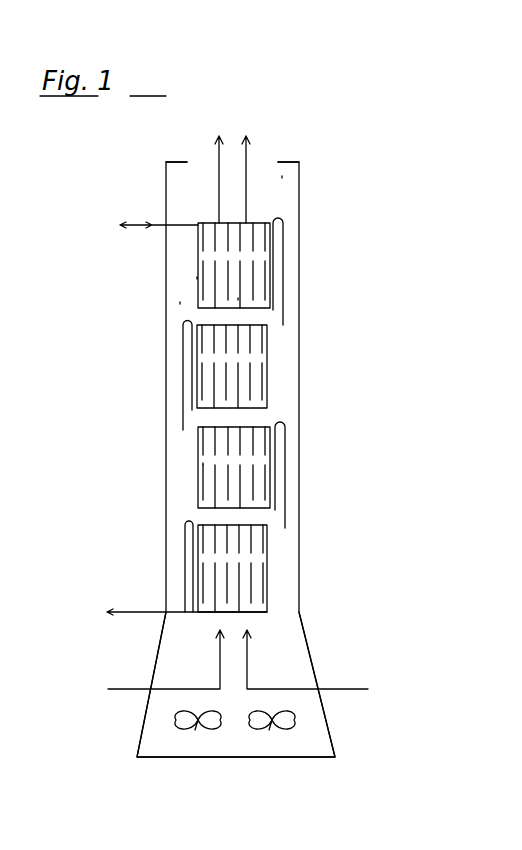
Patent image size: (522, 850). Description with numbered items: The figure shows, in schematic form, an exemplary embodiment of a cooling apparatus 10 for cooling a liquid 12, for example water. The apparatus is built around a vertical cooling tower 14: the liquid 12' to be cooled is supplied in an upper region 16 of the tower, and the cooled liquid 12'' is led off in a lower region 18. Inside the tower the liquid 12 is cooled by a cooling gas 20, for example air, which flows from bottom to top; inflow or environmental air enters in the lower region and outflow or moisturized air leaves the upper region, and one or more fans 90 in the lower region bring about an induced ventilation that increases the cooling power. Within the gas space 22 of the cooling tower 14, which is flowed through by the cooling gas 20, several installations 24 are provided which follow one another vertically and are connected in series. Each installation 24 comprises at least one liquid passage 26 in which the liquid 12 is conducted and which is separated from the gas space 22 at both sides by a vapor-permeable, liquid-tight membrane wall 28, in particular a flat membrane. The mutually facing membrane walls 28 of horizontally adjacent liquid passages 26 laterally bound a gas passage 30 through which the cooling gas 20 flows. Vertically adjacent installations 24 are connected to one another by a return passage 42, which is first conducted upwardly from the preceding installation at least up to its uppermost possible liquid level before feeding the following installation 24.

The cooling apparatus 10 is at (340, 64).
The liquid 12 is at (162, 417).
The liquid to be cooled 12' is at (149, 198).
The cooled liquid 12'' is at (183, 588).
The cooling tower 14 is at (310, 197).
The upper region 16 is at (282, 176).
The lower region 18 is at (175, 628).
The cooling gas 20 is at (215, 155).
The gas space 22 is at (180, 302).
The installation 24 is at (191, 283).
The liquid passage 26 is at (203, 463).
The membrane wall 28 is at (238, 298).
The gas passage 30 is at (218, 250).
The return passage 42 is at (185, 358).
The fan 90 is at (187, 743).